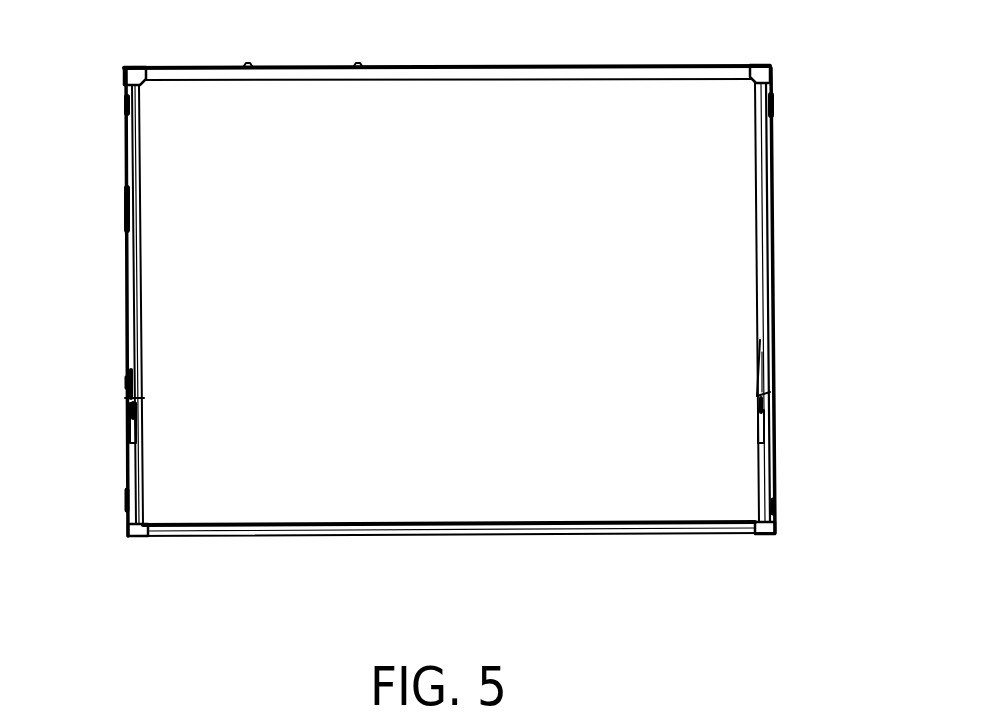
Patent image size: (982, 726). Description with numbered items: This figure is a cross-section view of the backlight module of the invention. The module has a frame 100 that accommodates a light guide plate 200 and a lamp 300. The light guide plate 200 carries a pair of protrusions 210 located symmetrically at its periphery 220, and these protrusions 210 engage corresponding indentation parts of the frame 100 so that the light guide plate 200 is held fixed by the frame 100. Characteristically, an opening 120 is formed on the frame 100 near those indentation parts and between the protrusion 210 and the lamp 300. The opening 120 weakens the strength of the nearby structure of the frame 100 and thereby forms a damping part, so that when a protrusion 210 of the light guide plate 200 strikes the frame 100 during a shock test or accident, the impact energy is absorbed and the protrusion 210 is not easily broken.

The frame 100 is at (773, 246).
The opening 120 is at (130, 418).
The light guide plate 200 is at (512, 422).
The protrusion 210 is at (131, 398).
The periphery 220 is at (132, 322).
The lamp 300 is at (700, 534).